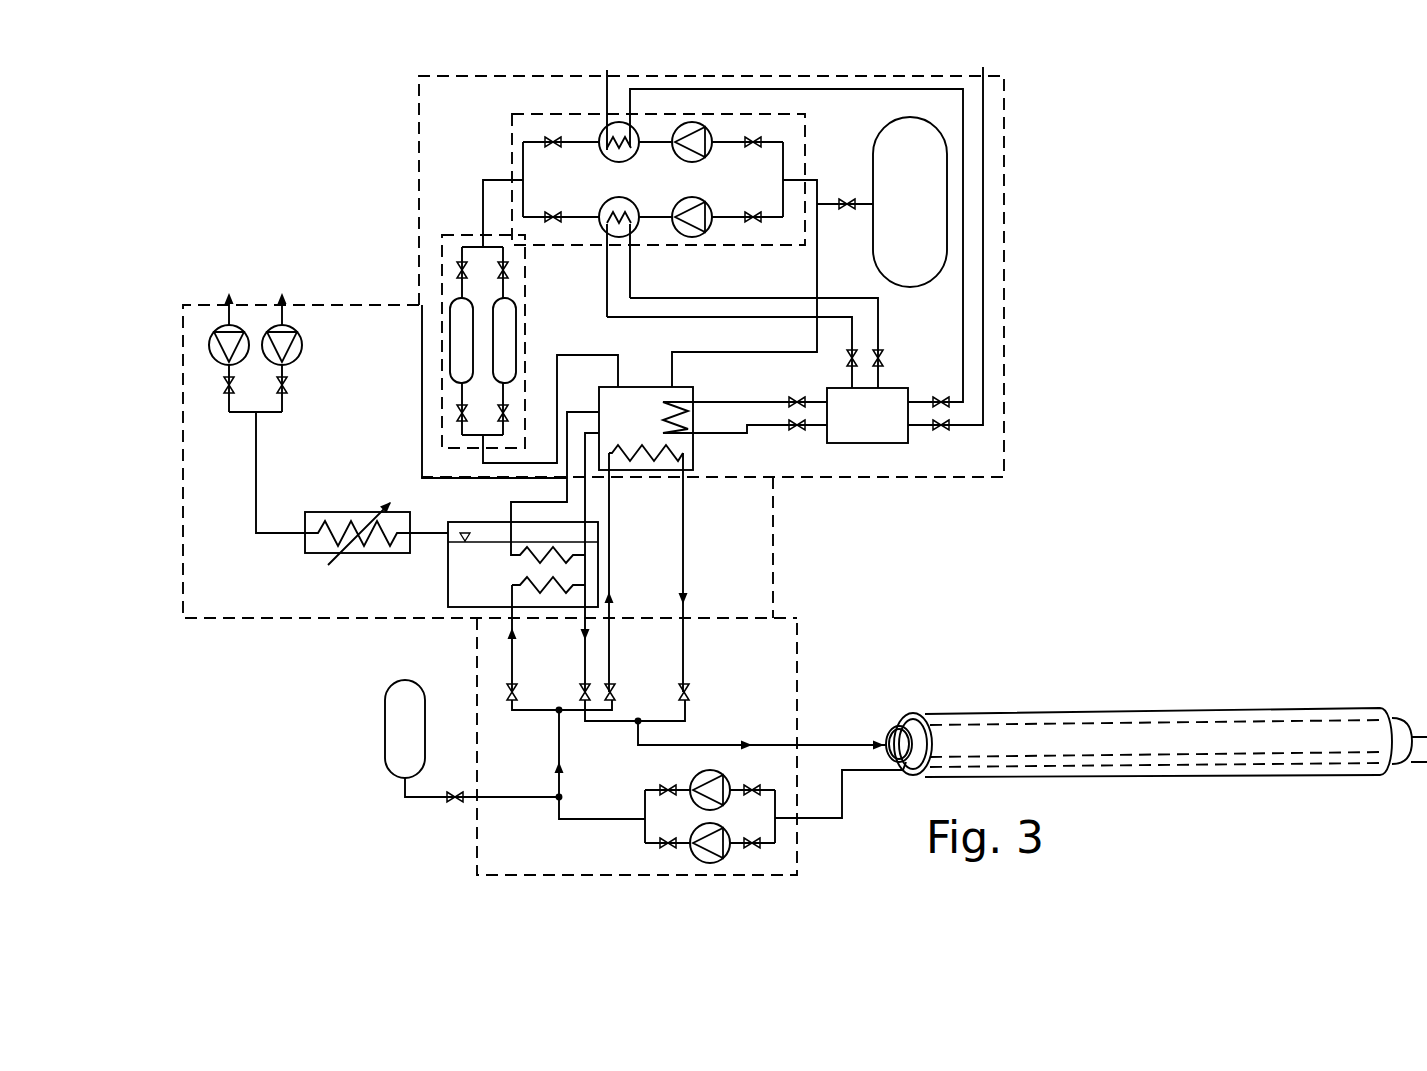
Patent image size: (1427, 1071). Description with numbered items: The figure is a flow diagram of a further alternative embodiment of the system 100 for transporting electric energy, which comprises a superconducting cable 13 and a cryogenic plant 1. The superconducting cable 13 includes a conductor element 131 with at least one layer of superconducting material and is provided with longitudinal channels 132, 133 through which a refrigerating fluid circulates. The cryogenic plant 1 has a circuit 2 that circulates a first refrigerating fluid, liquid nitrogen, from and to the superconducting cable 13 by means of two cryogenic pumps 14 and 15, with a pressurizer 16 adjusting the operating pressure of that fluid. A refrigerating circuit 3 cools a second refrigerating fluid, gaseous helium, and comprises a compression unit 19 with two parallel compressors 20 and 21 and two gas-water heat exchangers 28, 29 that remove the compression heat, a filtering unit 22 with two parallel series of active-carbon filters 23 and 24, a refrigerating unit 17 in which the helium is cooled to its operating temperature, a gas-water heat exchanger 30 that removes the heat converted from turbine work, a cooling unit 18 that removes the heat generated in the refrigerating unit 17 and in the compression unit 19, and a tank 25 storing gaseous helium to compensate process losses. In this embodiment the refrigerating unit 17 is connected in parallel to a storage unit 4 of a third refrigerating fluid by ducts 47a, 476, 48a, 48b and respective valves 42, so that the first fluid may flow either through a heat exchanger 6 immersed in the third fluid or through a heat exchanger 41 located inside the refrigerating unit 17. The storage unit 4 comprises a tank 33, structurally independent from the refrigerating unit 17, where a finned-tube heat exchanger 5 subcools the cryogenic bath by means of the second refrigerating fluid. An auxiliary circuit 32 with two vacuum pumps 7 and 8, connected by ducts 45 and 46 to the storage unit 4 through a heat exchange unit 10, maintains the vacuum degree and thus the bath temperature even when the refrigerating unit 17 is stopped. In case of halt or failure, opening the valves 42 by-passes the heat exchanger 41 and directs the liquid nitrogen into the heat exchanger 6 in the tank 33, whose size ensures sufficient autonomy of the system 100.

The cryogenic plant 1 is at (772, 62).
The circuit 2 is at (478, 822).
The refrigerating circuit 3 is at (1004, 175).
The storage unit 4 is at (630, 555).
The heat exchanger 5 is at (537, 538).
The heat exchanger 6 is at (560, 597).
The vacuum pump 7 is at (230, 325).
The vacuum pump 8 is at (285, 328).
The heat exchange unit 10 is at (330, 515).
The superconducting cable 13 is at (1058, 718).
The cryogenic pump 14 is at (695, 778).
The cryogenic pump 15 is at (710, 860).
The pressurizer 16 is at (398, 745).
The refrigerating unit 17 is at (636, 408).
The cooling unit 18 is at (882, 428).
The compression unit 19 is at (510, 152).
The compressor 20 is at (692, 158).
The compressor 21 is at (690, 200).
The filtering unit 22 is at (443, 238).
The active-carbon filters 23 is at (458, 318).
The active-carbon filters 24 is at (505, 340).
The tank 25 is at (893, 182).
The gas-water heat exchanger 28 is at (602, 163).
The gas-water heat exchanger 29 is at (607, 236).
The gas-water heat exchanger 30 is at (678, 425).
The auxiliary circuit 32 is at (264, 542).
The storage tank 33 is at (452, 585).
The heat exchanger 41 is at (676, 452).
The valves 42 is at (612, 690).
The duct 45 is at (182, 430).
The duct 46 is at (438, 537).
The duct 47a is at (512, 660).
The duct 48a is at (592, 645).
The duct 48b is at (688, 570).
The duct 476 is at (603, 492).
The system for transporting electric energy 100 is at (1025, 292).
The conductor element 131 is at (920, 717).
The longitudinal channel 132 is at (888, 738).
The longitudinal channel 133 is at (905, 768).